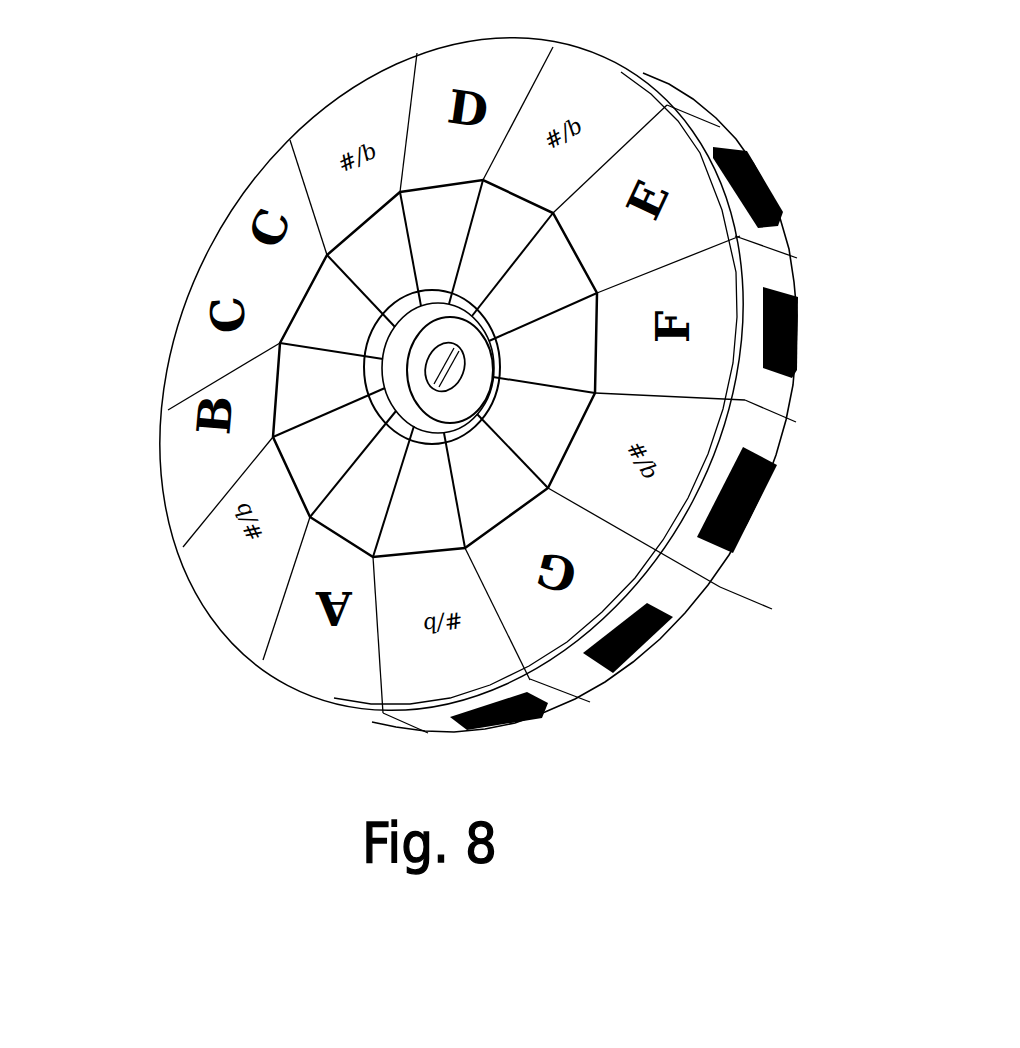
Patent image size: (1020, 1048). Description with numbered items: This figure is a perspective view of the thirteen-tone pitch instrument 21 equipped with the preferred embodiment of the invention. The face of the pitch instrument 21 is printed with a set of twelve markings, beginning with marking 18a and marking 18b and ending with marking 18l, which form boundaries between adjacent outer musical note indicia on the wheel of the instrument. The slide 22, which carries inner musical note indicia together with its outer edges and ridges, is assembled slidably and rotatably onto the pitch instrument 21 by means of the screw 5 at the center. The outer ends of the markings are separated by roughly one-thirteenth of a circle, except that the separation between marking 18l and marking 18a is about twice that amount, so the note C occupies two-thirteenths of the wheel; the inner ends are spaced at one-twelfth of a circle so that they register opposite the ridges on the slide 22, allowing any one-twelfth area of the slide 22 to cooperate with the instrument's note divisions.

The screw 5 is at (452, 378).
The pitch instrument 21 is at (710, 120).
The slide 22 is at (585, 310).
The marking 18a is at (307, 185).
The marking 18b is at (408, 135).
The marking 18l is at (207, 388).